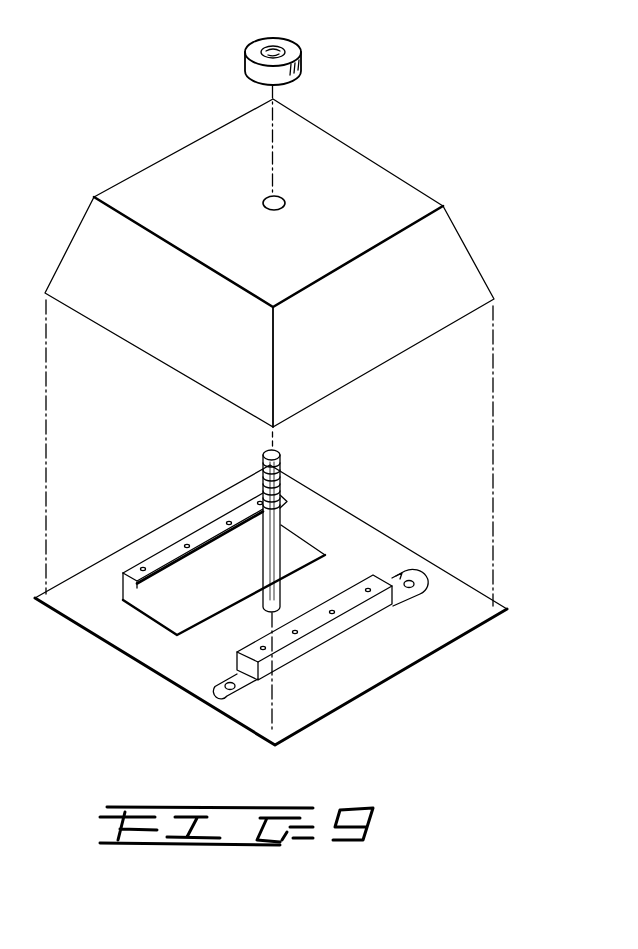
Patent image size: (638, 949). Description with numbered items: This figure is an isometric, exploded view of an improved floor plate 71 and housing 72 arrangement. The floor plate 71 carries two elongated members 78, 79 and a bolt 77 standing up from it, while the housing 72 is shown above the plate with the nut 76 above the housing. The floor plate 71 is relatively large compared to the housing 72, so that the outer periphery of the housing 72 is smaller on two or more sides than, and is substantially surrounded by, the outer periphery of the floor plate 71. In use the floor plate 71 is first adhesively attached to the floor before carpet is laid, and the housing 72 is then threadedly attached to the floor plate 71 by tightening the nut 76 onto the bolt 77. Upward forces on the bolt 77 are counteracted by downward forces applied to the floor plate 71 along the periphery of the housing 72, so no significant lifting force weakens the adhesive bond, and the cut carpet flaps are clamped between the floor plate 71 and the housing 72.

The floor plate 71 is at (192, 678).
The housing 72 is at (452, 233).
The nut 76 is at (299, 47).
The bolt 77 is at (273, 552).
The elongated member 78 is at (194, 527).
The elongated member 79 is at (372, 636).